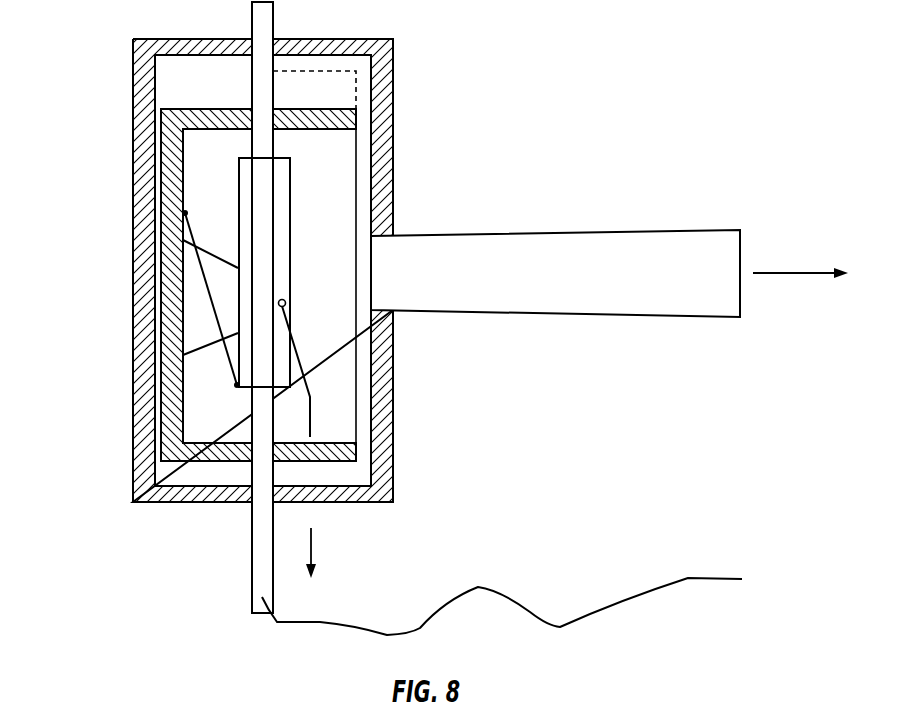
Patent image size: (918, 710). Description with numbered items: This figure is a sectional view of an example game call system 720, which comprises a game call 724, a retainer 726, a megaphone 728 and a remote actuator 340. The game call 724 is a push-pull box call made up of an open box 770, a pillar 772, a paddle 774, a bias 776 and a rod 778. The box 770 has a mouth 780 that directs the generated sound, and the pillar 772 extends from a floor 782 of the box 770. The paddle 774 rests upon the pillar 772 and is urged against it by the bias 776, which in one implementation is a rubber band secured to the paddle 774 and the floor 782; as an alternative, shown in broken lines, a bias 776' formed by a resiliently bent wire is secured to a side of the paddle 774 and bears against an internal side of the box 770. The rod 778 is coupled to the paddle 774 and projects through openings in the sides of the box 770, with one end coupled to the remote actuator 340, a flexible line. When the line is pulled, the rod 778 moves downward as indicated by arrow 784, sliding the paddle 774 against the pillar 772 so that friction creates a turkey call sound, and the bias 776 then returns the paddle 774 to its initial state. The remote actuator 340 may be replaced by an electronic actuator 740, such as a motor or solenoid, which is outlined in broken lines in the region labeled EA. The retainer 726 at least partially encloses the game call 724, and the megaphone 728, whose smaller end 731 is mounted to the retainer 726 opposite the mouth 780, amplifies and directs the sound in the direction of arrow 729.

The game call system 720 is at (80, 113).
The game call 724 is at (361, 467).
The retainer 726 is at (133, 472).
The megaphone 728 is at (615, 230).
The arrow 729 is at (792, 272).
The smaller end 731 is at (380, 315).
The electronic actuator 740 is at (390, 67).
The box 770 is at (199, 461).
The pillar 772 is at (199, 352).
The paddle 774 is at (290, 212).
The bias 776 is at (148, 287).
The bias 776' is at (376, 369).
The rod 778 is at (251, 543).
The mouth 780 is at (357, 140).
The floor 782 is at (190, 410).
The arrow 784 is at (313, 545).
The remote actuator 340 is at (628, 603).
The expansion area EA is at (314, 90).